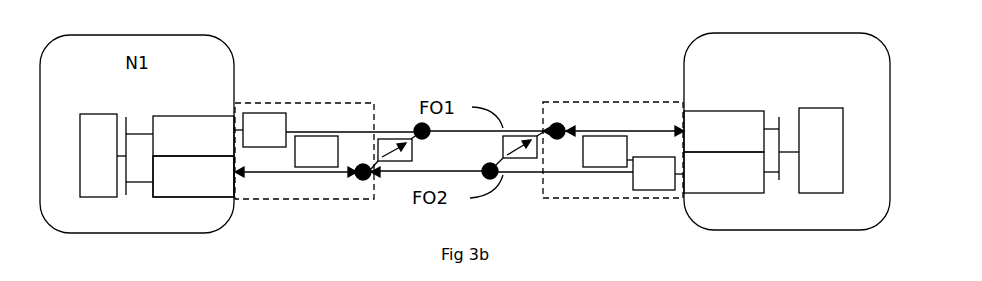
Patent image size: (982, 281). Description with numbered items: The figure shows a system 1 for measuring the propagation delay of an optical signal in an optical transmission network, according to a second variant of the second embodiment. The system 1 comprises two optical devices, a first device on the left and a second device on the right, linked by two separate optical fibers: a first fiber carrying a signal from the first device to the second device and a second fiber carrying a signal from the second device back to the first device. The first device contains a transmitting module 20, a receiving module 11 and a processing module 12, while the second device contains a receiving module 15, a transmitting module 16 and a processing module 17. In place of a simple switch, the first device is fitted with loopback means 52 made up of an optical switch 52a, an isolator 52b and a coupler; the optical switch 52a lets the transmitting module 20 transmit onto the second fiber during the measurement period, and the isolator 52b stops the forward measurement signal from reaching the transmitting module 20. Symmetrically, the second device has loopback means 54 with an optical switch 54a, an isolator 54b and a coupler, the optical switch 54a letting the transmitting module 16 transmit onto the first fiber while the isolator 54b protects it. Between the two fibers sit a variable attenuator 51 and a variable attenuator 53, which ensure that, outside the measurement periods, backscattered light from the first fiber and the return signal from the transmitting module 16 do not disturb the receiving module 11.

The system 1 is at (846, 19).
The receiving module 11 is at (203, 198).
The processing module 12 is at (110, 198).
The receiving module 15 is at (735, 110).
The transmitting module 16 is at (732, 195).
The processing module 17 is at (818, 195).
The transmitting module 20 is at (188, 155).
The variable attenuator 51 is at (412, 152).
The loopback means 52 is at (324, 165).
The optical switch 52a is at (287, 118).
The isolator 52b is at (296, 165).
The variable attenuator 53 is at (503, 142).
The loopback means 54 is at (591, 165).
The optical switch 54a is at (631, 184).
The isolator 54b is at (608, 131).